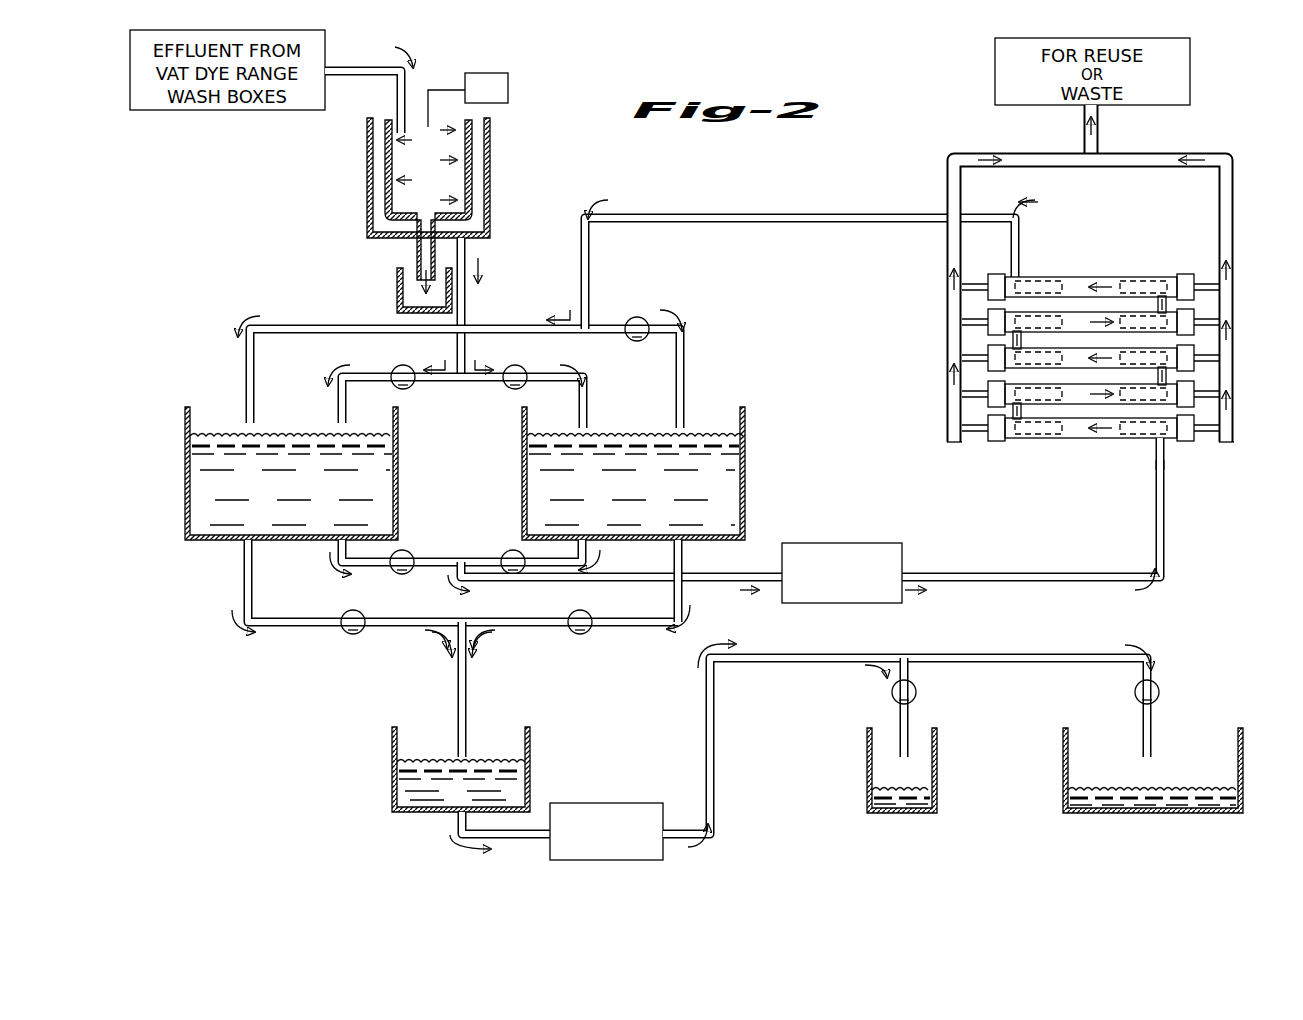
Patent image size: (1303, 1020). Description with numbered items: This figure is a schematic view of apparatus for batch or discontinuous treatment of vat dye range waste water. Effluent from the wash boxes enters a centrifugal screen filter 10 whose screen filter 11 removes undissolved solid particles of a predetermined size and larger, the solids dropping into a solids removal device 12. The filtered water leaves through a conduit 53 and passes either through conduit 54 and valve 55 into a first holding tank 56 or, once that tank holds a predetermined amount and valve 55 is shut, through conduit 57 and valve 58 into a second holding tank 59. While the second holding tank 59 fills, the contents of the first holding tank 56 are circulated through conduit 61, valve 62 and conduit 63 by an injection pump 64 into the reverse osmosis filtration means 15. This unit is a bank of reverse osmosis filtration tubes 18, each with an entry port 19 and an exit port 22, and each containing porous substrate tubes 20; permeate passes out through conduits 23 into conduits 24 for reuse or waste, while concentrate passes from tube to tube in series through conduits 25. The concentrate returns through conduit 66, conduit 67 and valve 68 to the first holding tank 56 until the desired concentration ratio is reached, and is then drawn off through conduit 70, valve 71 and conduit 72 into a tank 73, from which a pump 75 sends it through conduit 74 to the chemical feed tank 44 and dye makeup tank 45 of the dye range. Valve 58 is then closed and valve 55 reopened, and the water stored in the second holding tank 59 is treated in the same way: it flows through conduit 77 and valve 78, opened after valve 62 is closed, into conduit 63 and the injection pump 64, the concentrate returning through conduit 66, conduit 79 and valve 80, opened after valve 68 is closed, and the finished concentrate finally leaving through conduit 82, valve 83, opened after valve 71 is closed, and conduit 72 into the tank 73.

The centrifugal screen filter 10 is at (362, 167).
The screen filter 11 is at (472, 153).
The solids removal device 12 is at (397, 286).
The reverse osmosis filtration means 15 is at (1084, 320).
The reverse osmosis filtration tube 18 is at (1064, 278).
The entry port 19 is at (1166, 442).
The reverse osmosis filtration substrate tube 20 is at (1140, 278).
The exit port 22 is at (1000, 272).
The conduit 23 is at (1208, 290).
The conduit 24 is at (1252, 218).
The conduit 25 is at (1170, 374).
The chemical feed tank 44 is at (867, 786).
The dye makeup tank 45 is at (1063, 781).
The conduit 53 is at (468, 260).
The conduit 54 is at (492, 380).
The valve 55 is at (520, 345).
The first holding tank 56 is at (745, 463).
The conduit 57 is at (436, 380).
The valve 58 is at (378, 345).
The second holding tank 59 is at (185, 460).
The conduit 61 is at (488, 554).
The valve 62 is at (518, 580).
The conduit 63 is at (734, 578).
The injection pump 64 is at (850, 520).
The conduit 66 is at (807, 216).
The conduit 67 is at (608, 335).
The valve 68 is at (650, 298).
The conduit 70 is at (628, 628).
The valve 71 is at (586, 634).
The conduit 72 is at (468, 692).
The tank 73 is at (392, 790).
The conduit 74 is at (712, 750).
The pump 75 is at (645, 860).
The conduit 77 is at (432, 552).
The valve 78 is at (385, 578).
The conduit 79 is at (522, 325).
The valve 80 is at (294, 317).
The conduit 82 is at (309, 628).
The valve 83 is at (353, 635).